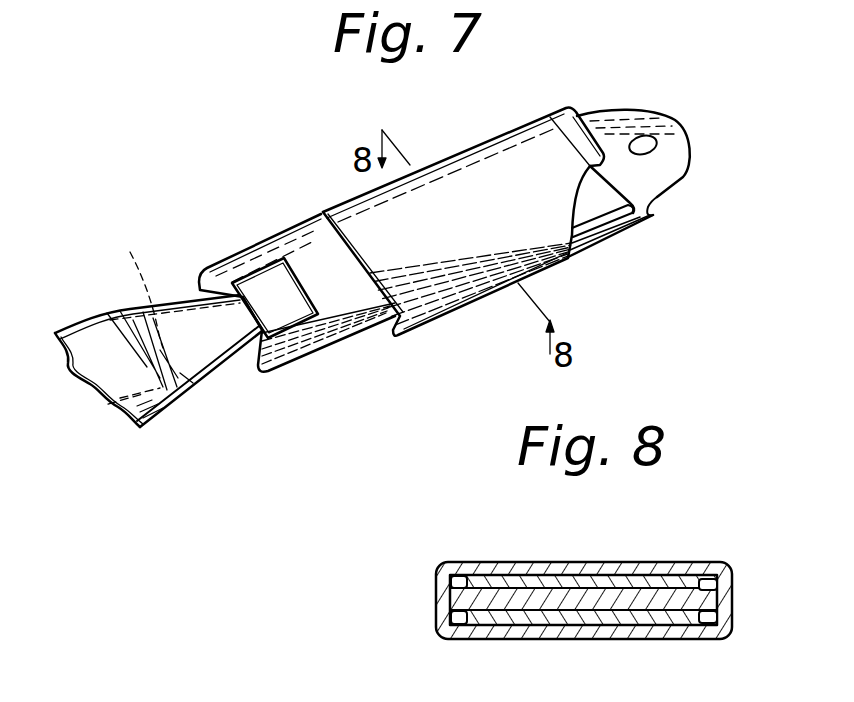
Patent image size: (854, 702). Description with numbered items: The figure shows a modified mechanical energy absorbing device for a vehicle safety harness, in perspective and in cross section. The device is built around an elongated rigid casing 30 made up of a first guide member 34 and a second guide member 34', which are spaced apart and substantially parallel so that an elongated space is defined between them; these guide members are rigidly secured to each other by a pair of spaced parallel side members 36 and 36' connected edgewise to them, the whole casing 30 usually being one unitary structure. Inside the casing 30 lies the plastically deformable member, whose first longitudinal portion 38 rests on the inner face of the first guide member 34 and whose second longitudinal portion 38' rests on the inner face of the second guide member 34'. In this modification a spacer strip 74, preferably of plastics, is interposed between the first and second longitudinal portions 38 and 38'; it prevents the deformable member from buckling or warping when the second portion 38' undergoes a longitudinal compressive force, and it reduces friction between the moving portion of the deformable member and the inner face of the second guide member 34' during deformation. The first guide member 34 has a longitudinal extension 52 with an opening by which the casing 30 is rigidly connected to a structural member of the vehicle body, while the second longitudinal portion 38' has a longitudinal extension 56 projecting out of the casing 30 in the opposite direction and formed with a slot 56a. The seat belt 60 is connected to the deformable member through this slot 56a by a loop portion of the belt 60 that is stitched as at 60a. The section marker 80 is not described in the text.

In FIG. 7, the casing 30 is at (431, 330).
In FIG. 7, the first guide member 34 is at (596, 211).
In FIG. 8, the first guide member 34 is at (583, 656).
In FIG. 8, the second guide member 34' is at (583, 543).
In FIG. 8, the side member 36 is at (537, 600).
In FIG. 8, the side member 36' is at (605, 638).
In FIG. 7, the first longitudinal portion 38 is at (631, 233).
In FIG. 8, the first longitudinal portion 38 is at (583, 645).
In FIG. 7, the second longitudinal portion 38' is at (610, 265).
In FIG. 8, the second longitudinal portion 38' is at (483, 559).
In FIG. 7, the longitudinal extension 52 is at (683, 177).
In FIG. 7, the longitudinal extension 56 is at (314, 354).
In FIG. 7, the slot 56a is at (250, 285).
In FIG. 7, the seat belt 60 is at (162, 417).
In FIG. 7, the stitching 60a is at (121, 284).
In FIG. 7, the spacer strip 74 is at (651, 216).
In FIG. 8, the spacer strip 74 is at (643, 618).
In FIG. 8, the gap / section region 80 is at (393, 697).